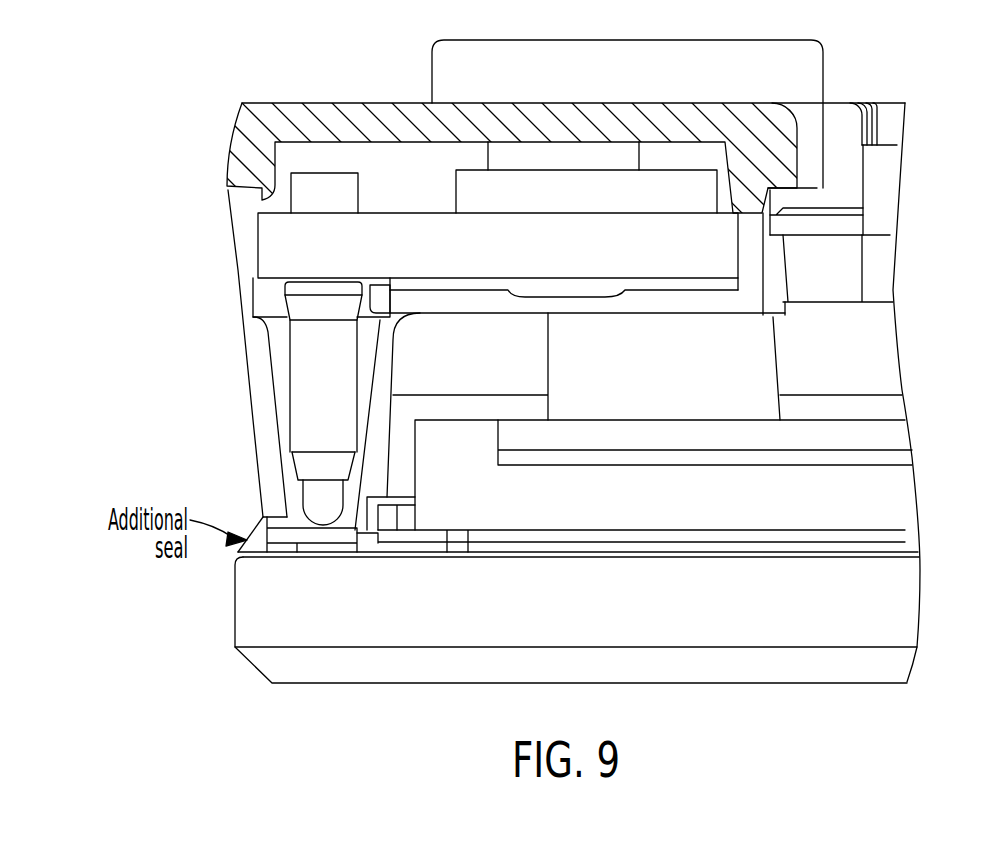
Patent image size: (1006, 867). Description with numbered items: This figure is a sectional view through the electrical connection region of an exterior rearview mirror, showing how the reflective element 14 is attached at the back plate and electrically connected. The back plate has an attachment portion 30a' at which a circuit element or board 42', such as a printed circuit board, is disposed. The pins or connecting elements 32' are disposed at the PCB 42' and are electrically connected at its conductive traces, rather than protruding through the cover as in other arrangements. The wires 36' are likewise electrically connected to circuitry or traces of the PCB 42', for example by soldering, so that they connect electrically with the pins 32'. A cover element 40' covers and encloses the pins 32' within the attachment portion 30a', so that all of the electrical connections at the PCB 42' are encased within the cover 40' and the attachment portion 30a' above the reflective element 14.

The cover element 40' is at (527, 163).
The circuit element or board 42' is at (625, 208).
The wires 36' is at (857, 392).
The pins or connecting elements 32' is at (270, 403).
The attachment portion 30a' is at (546, 371).
The reflective element 14 is at (908, 600).